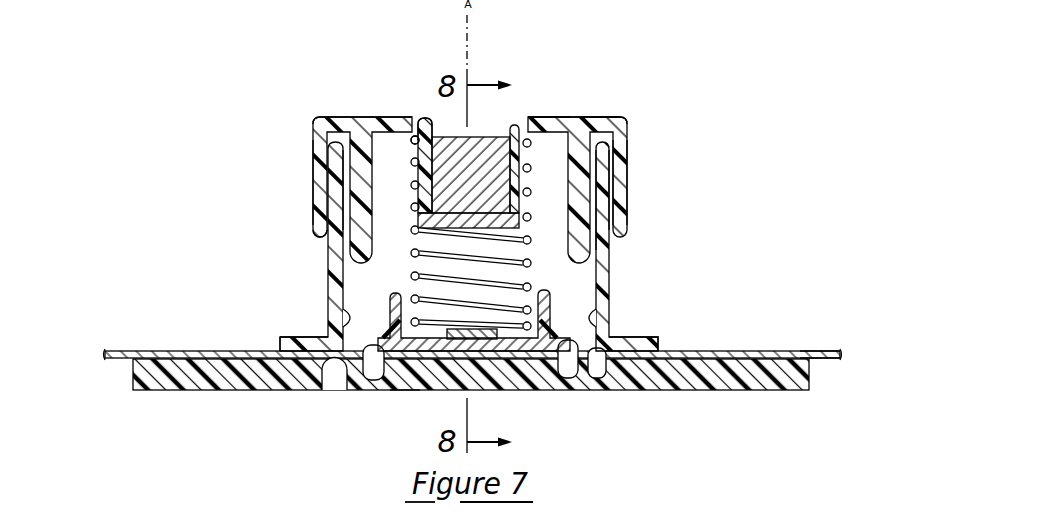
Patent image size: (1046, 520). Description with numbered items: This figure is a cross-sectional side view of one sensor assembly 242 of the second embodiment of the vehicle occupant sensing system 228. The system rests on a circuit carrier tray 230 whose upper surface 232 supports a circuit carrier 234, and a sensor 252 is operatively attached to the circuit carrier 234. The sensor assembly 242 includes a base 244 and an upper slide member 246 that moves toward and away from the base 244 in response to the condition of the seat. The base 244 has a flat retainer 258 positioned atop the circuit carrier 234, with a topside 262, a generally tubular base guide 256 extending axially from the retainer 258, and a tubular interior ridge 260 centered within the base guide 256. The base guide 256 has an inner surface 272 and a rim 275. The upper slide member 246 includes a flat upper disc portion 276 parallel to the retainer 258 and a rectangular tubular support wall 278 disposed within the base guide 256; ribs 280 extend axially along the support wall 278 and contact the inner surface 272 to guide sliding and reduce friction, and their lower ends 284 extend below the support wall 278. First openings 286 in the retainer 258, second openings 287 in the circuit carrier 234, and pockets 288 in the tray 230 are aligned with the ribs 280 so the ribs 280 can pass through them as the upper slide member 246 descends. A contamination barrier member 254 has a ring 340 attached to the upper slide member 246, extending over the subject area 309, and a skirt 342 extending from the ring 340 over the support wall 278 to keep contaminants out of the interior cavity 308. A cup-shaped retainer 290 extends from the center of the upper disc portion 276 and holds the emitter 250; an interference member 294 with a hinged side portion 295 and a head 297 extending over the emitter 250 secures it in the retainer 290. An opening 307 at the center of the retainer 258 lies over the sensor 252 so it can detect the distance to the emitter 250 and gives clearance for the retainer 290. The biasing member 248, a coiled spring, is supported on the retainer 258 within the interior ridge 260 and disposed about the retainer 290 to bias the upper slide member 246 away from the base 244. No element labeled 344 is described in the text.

The vehicle occupant sensing system 228 is at (730, 71).
The sensor assembly 242 is at (190, 170).
The contamination barrier member 254 is at (305, 125).
The outer wall of first housing cup 344 is at (327, 150).
The rib 280 is at (343, 181).
The retainer 290 is at (411, 187).
The subject area 309 is at (330, 227).
The base 244 is at (323, 253).
The biasing member 248 is at (410, 273).
The inner surface 272 is at (341, 316).
The topside 262 is at (297, 340).
The pocket 288 is at (335, 388).
The first opening 286 is at (363, 390).
The opening 307 is at (405, 390).
The sensor 252 is at (476, 346).
The second opening 287 is at (598, 378).
The circuit carrier tray 230 is at (758, 382).
The upper surface 232 is at (734, 352).
The circuit carrier 234 is at (819, 351).
The retainer 258 is at (624, 337).
The interior cavity 308 is at (597, 317).
The interior ridge 260 is at (575, 298).
The base guide 256 is at (604, 256).
The lower end 284 is at (603, 240).
The rim 275 is at (622, 197).
The skirt 342 is at (609, 172).
The support wall 278 is at (627, 158).
The upper slide member 246 is at (641, 138).
The ring 340 is at (614, 110).
The upper disc portion 276 is at (550, 117).
The emitter 250 is at (490, 135).
The head 297 is at (437, 115).
The interference member 294 is at (414, 110).
The side portion 295 is at (409, 136).